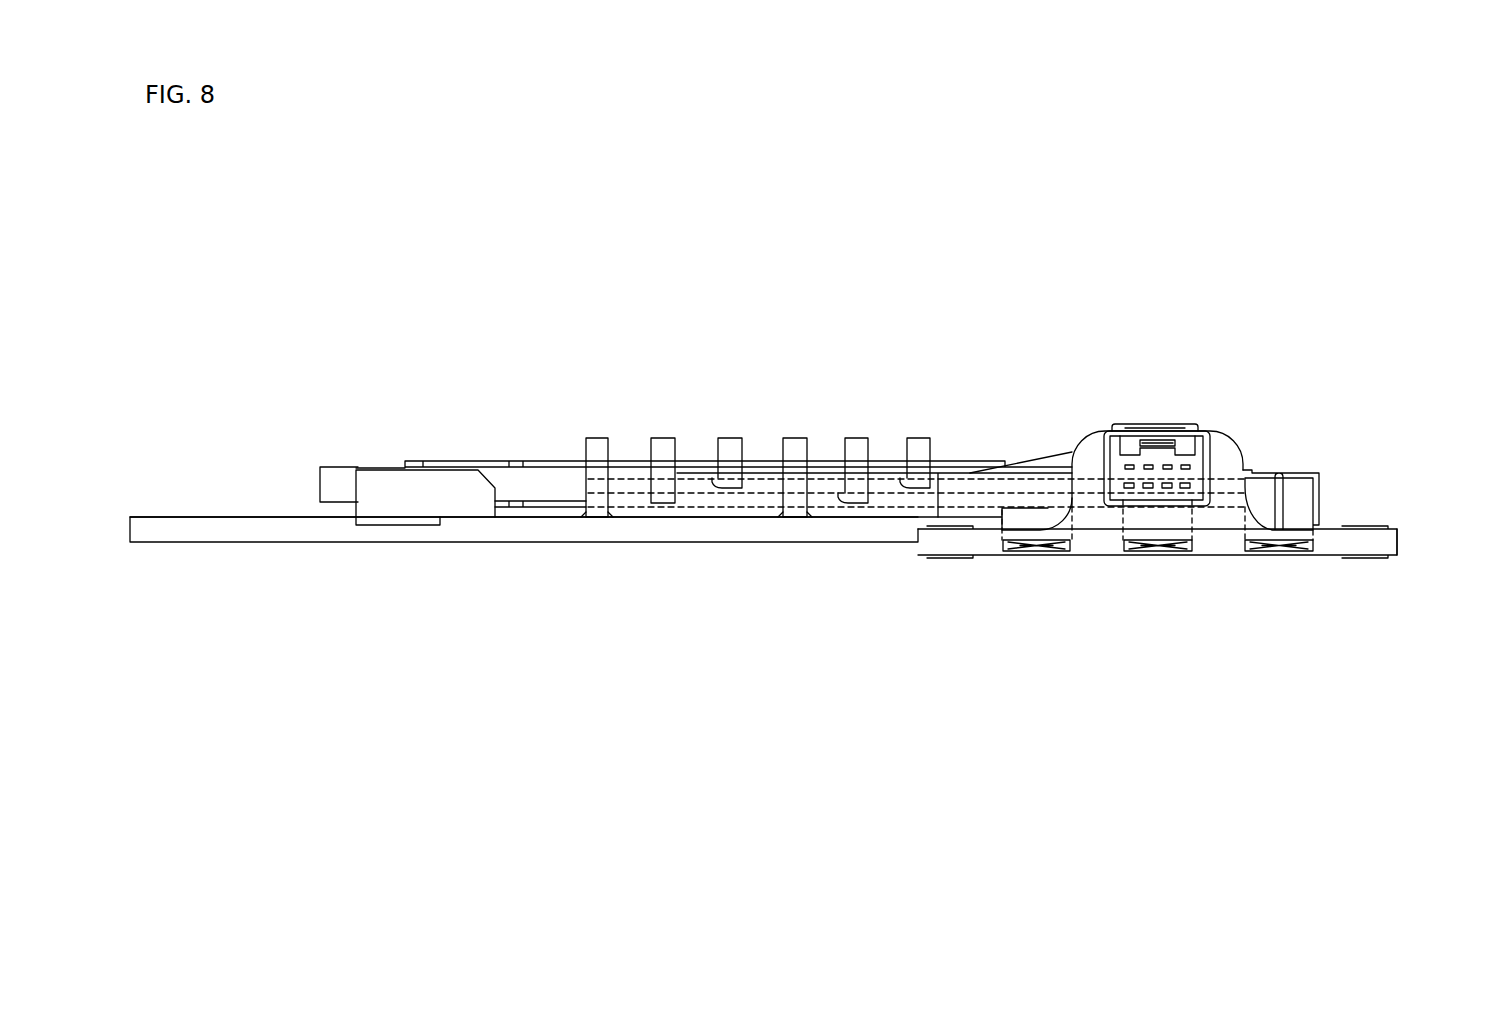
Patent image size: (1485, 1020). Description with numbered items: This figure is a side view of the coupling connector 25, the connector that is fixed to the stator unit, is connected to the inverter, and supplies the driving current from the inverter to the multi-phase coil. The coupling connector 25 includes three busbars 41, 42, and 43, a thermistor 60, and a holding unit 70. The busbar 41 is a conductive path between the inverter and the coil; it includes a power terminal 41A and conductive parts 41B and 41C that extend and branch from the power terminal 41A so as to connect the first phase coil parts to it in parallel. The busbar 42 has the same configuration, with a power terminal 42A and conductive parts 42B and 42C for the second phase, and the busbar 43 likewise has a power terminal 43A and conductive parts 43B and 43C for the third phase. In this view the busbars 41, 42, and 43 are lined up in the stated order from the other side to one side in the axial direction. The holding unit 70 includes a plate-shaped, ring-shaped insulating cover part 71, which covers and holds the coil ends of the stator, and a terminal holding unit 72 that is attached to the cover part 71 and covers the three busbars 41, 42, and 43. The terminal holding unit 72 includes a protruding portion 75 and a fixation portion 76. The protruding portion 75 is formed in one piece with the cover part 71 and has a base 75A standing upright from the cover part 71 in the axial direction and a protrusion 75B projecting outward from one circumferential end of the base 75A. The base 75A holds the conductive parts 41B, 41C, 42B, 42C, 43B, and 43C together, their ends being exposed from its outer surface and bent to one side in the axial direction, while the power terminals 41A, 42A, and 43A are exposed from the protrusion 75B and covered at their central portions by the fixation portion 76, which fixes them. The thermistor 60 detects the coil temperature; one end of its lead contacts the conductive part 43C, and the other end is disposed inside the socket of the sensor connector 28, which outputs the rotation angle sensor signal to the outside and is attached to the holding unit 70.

The coupling connector 25 is at (1223, 430).
The sensor connector 28 is at (1058, 455).
The busbar 41 is at (1030, 551).
The power terminal 41A is at (1045, 551).
The conductive part 41B is at (597, 438).
The conductive part 41C is at (800, 438).
The busbar 42 is at (1150, 551).
The power terminal 42A is at (1165, 551).
The conductive part 42B is at (666, 438).
The conductive part 42C is at (862, 438).
The busbar 43 is at (1272, 551).
The power terminal 43A is at (1288, 551).
The conductive part 43B is at (731, 438).
The conductive part 43C is at (922, 438).
The thermistor 60 is at (1283, 498).
The holding unit 70 is at (205, 517).
The cover part 71 is at (243, 517).
The terminal holding unit 72 is at (1385, 505).
The protruding portion 75 is at (618, 498).
The base 75A is at (637, 499).
The protrusion 75B is at (1027, 470).
The fixation portion 76 is at (1397, 545).